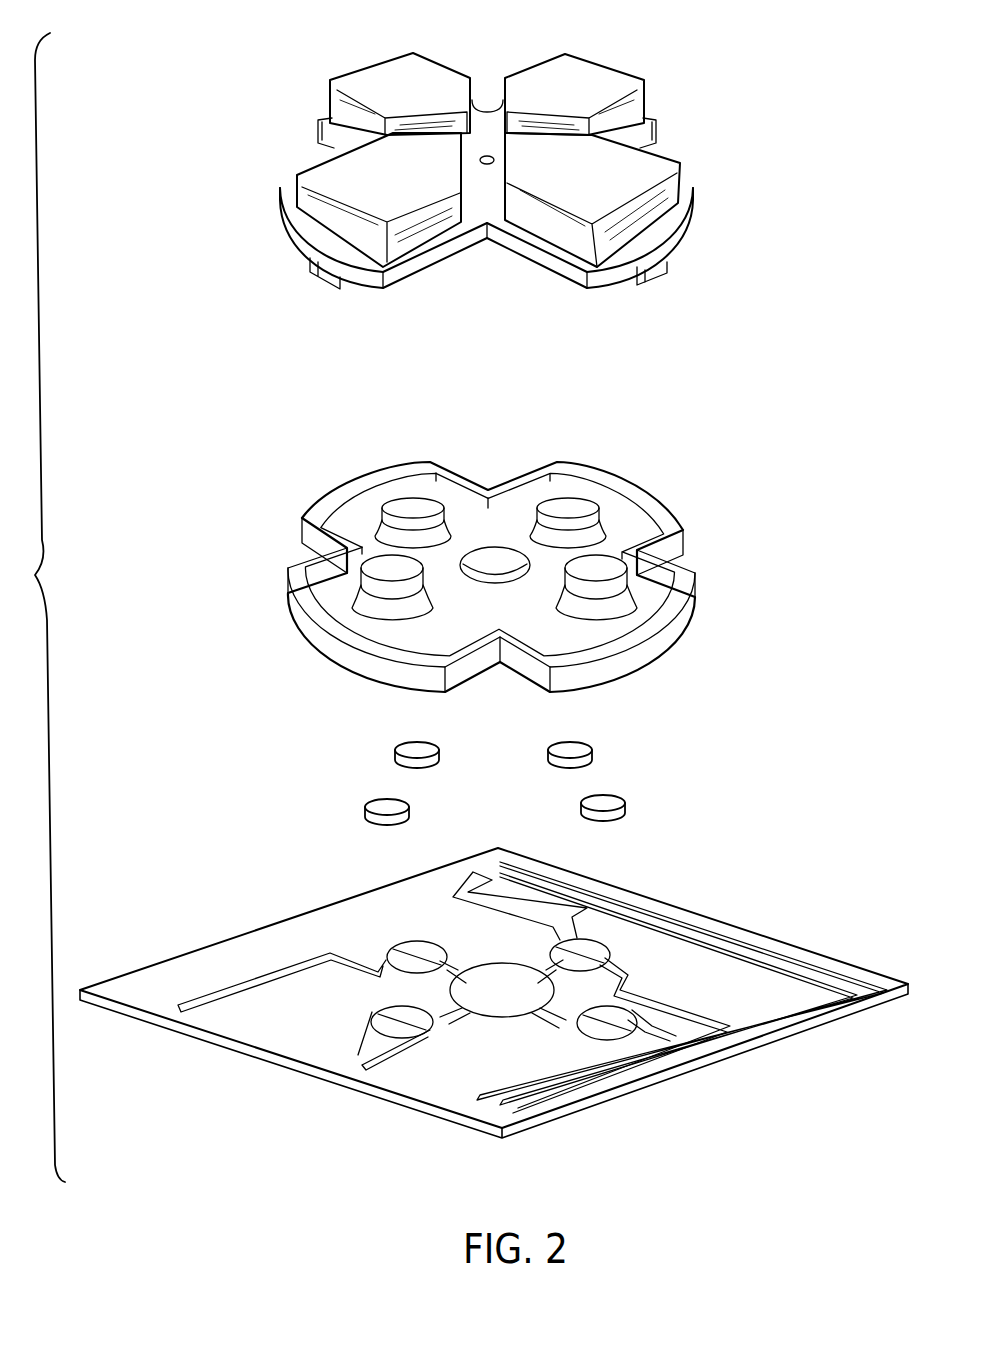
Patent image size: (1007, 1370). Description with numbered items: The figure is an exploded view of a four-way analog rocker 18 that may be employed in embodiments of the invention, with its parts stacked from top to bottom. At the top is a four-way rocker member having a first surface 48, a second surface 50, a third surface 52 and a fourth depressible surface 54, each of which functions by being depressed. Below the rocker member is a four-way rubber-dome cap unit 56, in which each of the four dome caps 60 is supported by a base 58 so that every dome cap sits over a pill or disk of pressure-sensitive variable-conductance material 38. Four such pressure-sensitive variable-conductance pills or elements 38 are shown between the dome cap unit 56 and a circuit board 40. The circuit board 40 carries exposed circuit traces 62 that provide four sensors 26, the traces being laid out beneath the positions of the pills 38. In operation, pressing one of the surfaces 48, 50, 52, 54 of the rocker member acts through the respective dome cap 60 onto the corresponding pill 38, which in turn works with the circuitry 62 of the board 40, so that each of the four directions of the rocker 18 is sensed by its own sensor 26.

The 4-way analog rocker 18 is at (222, 187).
The sensors 26 is at (682, 793).
The pressure-sensitive variable-conductance pills 38 is at (593, 800).
The circuit board 40 is at (763, 937).
The first surface 48 is at (370, 65).
The second surface 50 is at (590, 185).
The third surface 52 is at (377, 198).
The fourth depressible surface 54 is at (595, 70).
The 4-way rubber-dome cap unit 56 is at (620, 478).
The base 58 is at (357, 523).
The dome caps 60 is at (392, 572).
The circuit traces 62 is at (718, 1038).